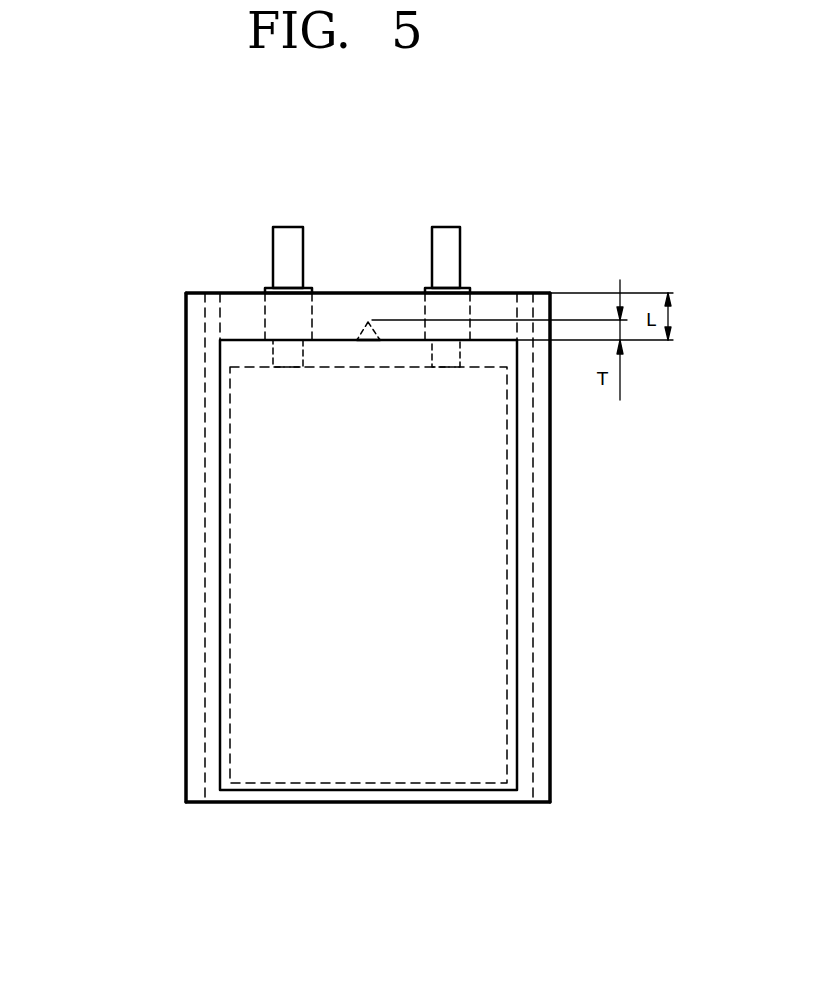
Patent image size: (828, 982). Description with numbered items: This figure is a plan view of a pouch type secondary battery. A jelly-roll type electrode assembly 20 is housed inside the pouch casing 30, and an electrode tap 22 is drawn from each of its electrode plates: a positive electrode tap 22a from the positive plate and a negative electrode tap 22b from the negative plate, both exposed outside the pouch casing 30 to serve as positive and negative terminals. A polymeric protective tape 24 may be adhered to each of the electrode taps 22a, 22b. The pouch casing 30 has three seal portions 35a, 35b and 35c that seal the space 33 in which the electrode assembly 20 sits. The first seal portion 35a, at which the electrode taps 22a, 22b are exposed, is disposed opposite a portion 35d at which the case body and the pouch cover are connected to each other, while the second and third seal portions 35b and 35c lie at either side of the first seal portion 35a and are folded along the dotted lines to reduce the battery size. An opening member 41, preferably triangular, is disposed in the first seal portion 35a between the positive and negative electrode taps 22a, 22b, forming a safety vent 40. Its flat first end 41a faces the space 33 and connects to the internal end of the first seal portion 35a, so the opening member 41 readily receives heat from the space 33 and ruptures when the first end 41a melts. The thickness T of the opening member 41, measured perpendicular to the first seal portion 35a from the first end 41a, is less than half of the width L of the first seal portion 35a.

The jelly-roll type electrode assembly 20 is at (263, 683).
The electrode tap 22 is at (445, 143).
The positive electrode tap 22a is at (450, 233).
The negative electrode tap 22b is at (290, 233).
The polymeric protective tape 24 is at (312, 290).
The pouch casing 30 is at (178, 485).
The space 33 is at (501, 328).
The first seal portion 35a is at (240, 302).
The second seal portion 35b is at (198, 545).
The third seal portion 35c is at (542, 552).
The portion at which the case body and the pouch cover are connected 35d is at (435, 800).
The safety vent 40 is at (378, 325).
The opening member 41 is at (368, 322).
The first end 41a is at (367, 340).